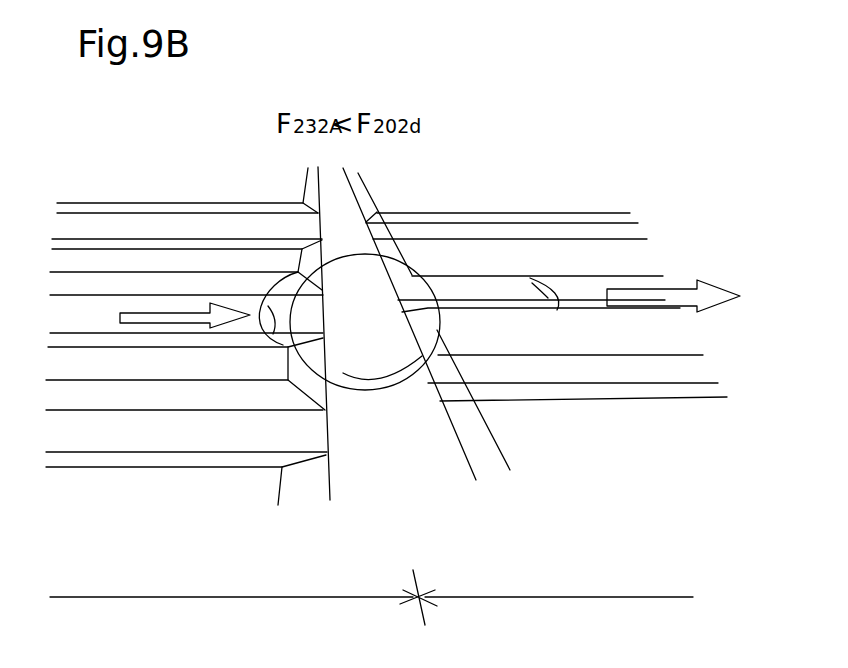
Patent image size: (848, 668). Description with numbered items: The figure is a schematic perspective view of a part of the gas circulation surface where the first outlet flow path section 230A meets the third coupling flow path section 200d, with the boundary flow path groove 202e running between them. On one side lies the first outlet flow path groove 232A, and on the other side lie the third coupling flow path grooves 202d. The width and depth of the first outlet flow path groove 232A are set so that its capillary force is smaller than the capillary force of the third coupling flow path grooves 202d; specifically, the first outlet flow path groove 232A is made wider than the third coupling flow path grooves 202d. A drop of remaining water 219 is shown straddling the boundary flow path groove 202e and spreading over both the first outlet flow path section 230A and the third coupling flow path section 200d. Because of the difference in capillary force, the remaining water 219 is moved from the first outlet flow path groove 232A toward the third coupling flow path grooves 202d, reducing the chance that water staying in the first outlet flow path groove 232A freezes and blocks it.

The first outlet flow path groove 232A is at (187, 228).
The third coupling flow path grooves 202d is at (537, 233).
The remaining water 219 is at (378, 390).
The boundary flow path groove 202e is at (433, 460).
The first outlet flow path section 230A is at (231, 613).
The third coupling flow path section 200d is at (546, 600).